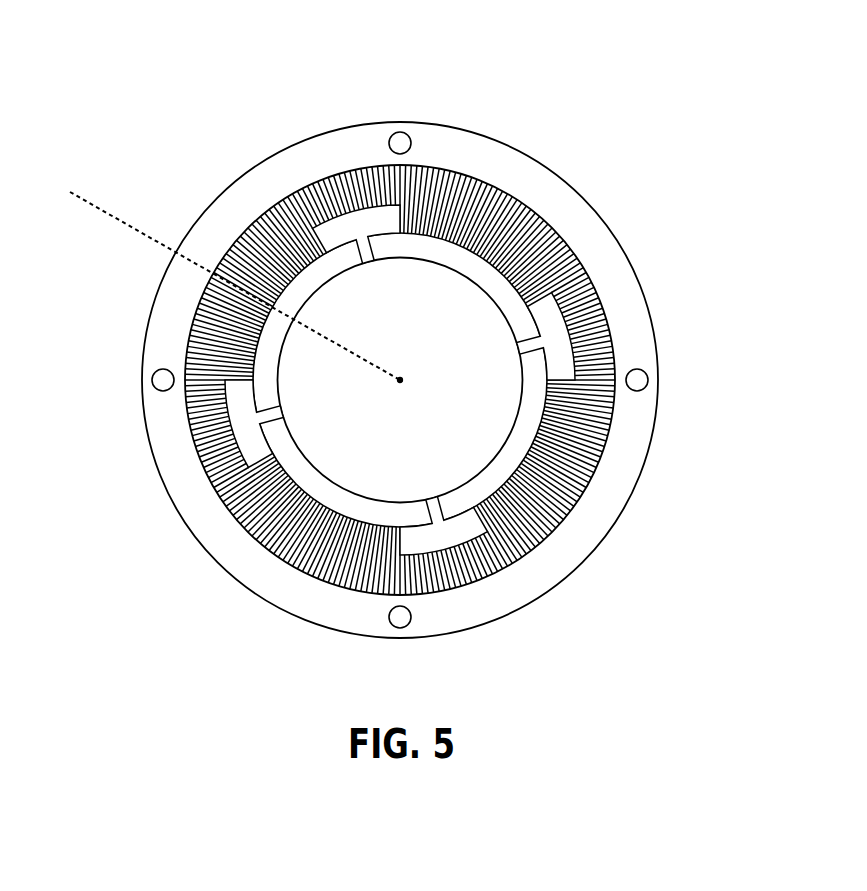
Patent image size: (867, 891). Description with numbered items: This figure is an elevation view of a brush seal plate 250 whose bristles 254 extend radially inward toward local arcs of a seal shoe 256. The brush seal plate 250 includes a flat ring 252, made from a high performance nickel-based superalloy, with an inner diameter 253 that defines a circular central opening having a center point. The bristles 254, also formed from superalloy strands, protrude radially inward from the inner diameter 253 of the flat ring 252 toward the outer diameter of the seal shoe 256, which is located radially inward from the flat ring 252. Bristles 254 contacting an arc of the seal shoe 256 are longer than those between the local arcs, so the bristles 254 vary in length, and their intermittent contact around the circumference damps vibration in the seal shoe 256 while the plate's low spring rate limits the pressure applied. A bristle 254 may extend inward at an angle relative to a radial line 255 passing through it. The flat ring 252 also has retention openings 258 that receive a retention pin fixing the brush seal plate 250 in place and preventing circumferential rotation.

The brush seal plate 250 is at (224, 107).
The flat ring 252 is at (447, 145).
The inner diameter 253 is at (373, 167).
The bristles 254 is at (518, 208).
The radial line 255 is at (98, 210).
The seal shoe 256 is at (493, 282).
The retention openings 258 is at (636, 380).